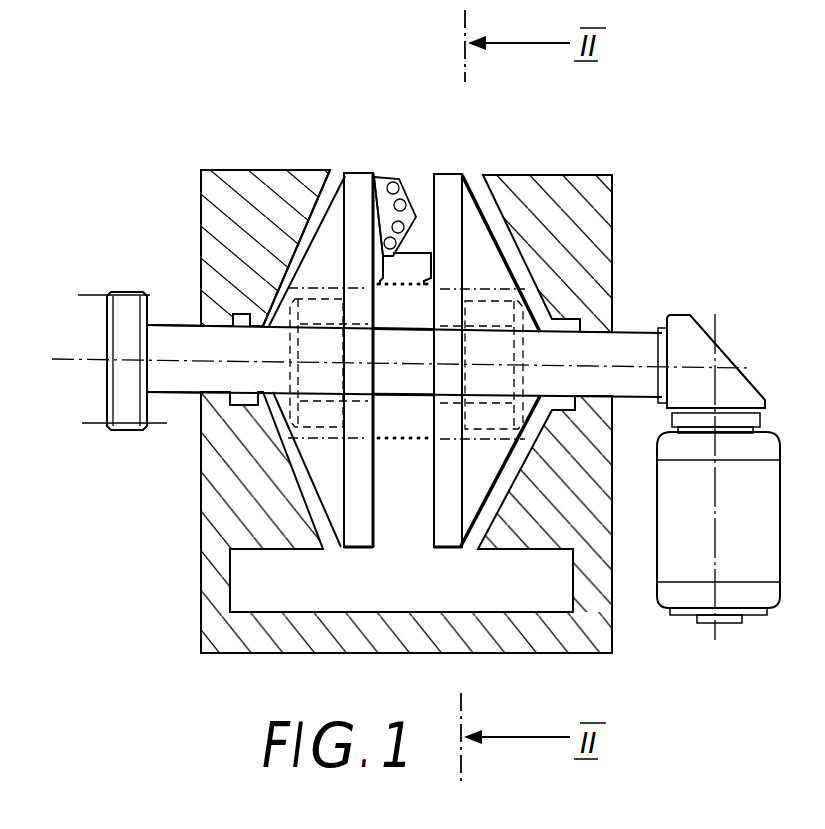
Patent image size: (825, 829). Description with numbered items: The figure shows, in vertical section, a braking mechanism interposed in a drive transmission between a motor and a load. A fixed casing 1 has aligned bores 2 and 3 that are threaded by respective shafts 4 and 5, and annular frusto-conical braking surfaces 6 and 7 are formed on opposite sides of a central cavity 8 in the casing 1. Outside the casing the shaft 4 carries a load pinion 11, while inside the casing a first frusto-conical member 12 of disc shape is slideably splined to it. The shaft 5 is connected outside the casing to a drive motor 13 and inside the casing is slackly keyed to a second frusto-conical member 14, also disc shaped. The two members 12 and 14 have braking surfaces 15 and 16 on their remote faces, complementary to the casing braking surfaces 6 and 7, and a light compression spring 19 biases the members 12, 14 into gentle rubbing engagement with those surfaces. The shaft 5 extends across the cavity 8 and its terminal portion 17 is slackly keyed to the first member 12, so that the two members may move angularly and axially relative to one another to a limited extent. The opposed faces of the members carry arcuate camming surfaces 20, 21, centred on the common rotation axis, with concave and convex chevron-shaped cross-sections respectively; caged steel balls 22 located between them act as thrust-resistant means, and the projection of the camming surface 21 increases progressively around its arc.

The fixed casing 1 is at (290, 630).
The bore 2 is at (218, 398).
The bore 3 is at (593, 330).
The shaft 4 is at (173, 335).
The shaft 5 is at (630, 345).
The braking surface 6 is at (305, 203).
The braking surface 7 is at (517, 233).
The central cavity 8 is at (398, 512).
The load pinion 11 is at (120, 311).
The first frusto-conical member 12 is at (335, 495).
The drive motor 13 is at (688, 567).
The second frusto-conical member 14 is at (472, 498).
The braking surface 15 is at (280, 228).
The braking surface 16 is at (487, 213).
The terminal portion 17 is at (297, 438).
The light compression spring 19 is at (391, 443).
The camming surface 20 is at (373, 203).
The camming surface 21 is at (420, 178).
The caged steel balls 22 is at (393, 182).